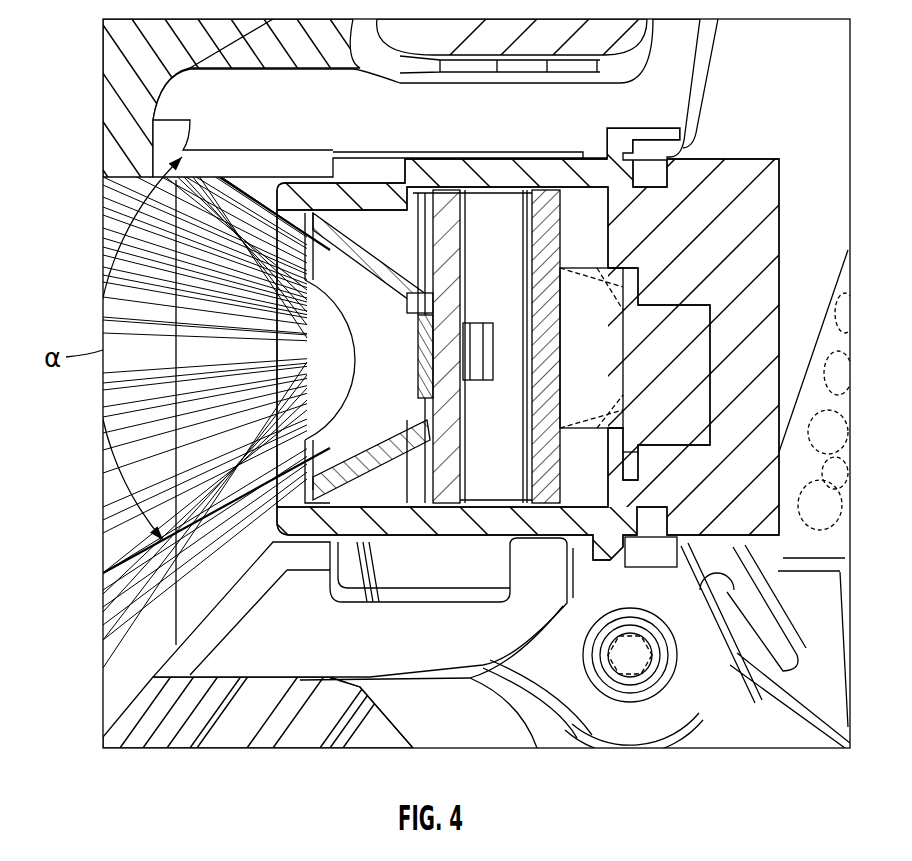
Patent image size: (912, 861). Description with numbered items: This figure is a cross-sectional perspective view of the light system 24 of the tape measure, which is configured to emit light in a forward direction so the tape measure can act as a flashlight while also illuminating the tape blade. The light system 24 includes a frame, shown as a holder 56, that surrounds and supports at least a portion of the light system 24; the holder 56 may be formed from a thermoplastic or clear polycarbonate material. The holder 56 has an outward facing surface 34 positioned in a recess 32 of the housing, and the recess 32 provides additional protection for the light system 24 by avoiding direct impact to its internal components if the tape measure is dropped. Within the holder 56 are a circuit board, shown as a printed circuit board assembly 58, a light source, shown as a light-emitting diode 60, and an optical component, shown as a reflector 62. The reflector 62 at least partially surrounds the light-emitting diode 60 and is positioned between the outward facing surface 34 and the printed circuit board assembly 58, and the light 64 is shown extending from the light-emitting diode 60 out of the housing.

The light system 24 is at (62, 263).
The recess 32 is at (82, 487).
The outward facing surface 34 is at (330, 450).
The holder 56 is at (597, 173).
The printed circuit board assembly 58 is at (547, 225).
The light-emitting diode 60 is at (418, 328).
The reflector 62 is at (353, 460).
The light 64 is at (123, 170).